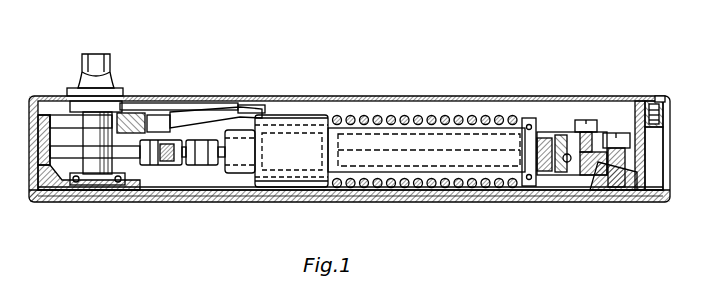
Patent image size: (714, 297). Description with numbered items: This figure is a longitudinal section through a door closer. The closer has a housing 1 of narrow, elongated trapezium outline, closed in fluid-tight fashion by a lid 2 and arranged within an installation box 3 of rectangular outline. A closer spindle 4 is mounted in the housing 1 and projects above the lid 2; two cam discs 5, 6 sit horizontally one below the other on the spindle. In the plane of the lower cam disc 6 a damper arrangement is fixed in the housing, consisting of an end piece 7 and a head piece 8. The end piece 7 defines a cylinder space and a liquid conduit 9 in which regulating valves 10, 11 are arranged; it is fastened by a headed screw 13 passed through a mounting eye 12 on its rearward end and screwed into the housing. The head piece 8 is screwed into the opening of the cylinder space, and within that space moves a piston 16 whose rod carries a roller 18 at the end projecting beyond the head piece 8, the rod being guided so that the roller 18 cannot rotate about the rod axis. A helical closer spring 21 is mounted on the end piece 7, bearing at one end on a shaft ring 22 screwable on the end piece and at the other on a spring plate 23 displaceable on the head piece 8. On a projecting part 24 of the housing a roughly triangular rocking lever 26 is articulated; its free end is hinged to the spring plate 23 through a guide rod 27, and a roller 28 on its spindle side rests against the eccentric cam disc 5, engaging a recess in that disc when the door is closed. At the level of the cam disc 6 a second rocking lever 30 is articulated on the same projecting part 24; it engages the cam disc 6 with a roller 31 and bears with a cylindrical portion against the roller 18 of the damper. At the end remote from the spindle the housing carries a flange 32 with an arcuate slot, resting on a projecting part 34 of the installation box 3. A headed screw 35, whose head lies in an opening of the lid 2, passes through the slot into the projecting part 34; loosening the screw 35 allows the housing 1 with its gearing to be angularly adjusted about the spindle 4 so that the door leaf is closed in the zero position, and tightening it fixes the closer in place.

The housing 1 is at (256, 197).
The lid 2 is at (365, 98).
The installation box 3 is at (287, 200).
The closer spindle 4 is at (110, 82).
The cam disc 5 is at (58, 118).
The cam disc 6 is at (63, 152).
The end piece 7 is at (501, 112).
The head piece 8 is at (246, 140).
The liquid conduit 9 is at (554, 135).
The regulating valve 10 is at (567, 164).
The regulating valve 11 is at (586, 165).
The mounting eye 12 is at (630, 194).
The headed screw 13 is at (611, 132).
The piston 16 is at (388, 155).
The roller 18 is at (200, 152).
The helical closer spring 21 is at (419, 116).
The shaft ring 22 is at (533, 125).
The spring plate 23 is at (289, 128).
The projecting part 24 is at (164, 105).
The rocking lever 26 is at (182, 108).
The guide rod 27 is at (226, 108).
The roller 28 is at (136, 122).
The second rocking lever 30 is at (172, 165).
The roller 31 is at (151, 150).
The flange 32 is at (661, 99).
The projecting part 34 is at (650, 145).
The headed screw 35 is at (652, 102).